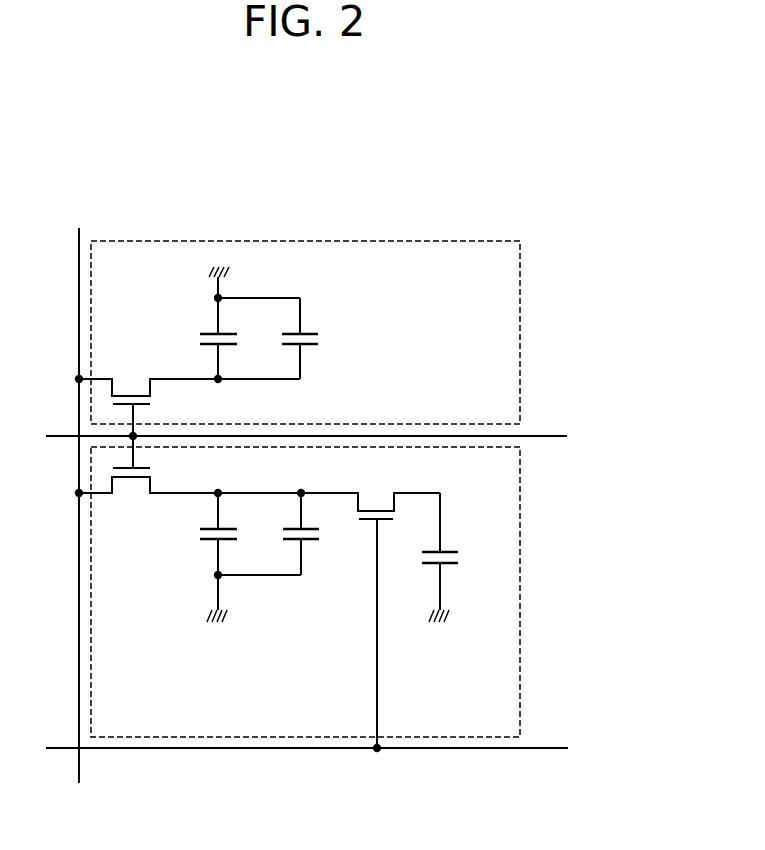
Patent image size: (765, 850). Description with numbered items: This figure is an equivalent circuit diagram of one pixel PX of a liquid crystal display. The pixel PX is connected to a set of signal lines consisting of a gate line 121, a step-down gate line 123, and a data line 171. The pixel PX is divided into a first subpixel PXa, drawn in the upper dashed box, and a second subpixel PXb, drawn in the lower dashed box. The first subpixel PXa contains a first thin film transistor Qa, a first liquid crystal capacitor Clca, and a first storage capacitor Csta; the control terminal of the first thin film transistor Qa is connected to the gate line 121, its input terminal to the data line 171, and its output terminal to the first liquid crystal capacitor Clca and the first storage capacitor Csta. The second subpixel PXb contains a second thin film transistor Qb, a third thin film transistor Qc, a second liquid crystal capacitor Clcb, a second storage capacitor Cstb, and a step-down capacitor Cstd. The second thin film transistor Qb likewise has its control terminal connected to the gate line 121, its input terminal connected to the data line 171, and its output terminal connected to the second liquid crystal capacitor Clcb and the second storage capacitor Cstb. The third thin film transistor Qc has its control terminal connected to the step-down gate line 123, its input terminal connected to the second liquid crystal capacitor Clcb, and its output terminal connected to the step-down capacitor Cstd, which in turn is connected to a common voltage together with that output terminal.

The pixel PX is at (340, 443).
The first subpixel PXa is at (402, 241).
The second subpixel PXb is at (520, 500).
The data line 171 is at (79, 273).
The gate line 121 is at (58, 435).
The step-down gate line 123 is at (543, 748).
The first thin film transistor Qa is at (188, 399).
The second thin film transistor Qb is at (190, 476).
The third thin film transistor Qc is at (370, 611).
The first liquid crystal capacitor Clca is at (230, 323).
The first storage capacitor Csta is at (324, 338).
The second liquid crystal capacitor Clcb is at (230, 557).
The second storage capacitor Cstb is at (325, 534).
The step-down capacitor Cstd is at (464, 557).